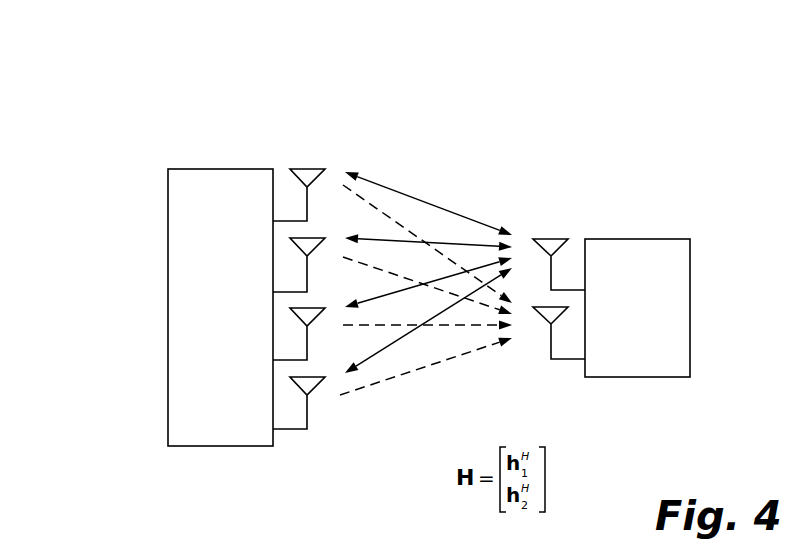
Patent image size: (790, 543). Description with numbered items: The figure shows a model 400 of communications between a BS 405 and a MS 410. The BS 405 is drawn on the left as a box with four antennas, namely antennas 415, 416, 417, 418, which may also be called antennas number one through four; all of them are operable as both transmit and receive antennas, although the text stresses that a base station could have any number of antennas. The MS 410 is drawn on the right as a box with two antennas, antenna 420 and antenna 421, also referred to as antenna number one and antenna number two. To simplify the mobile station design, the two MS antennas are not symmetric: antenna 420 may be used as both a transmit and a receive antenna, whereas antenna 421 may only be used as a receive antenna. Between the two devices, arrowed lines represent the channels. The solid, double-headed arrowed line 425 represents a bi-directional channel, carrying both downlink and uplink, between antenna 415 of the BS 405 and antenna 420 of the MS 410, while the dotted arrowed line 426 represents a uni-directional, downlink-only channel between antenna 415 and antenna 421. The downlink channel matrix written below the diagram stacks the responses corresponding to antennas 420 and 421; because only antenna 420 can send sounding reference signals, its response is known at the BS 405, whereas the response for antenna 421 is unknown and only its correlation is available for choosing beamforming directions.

The model 400 is at (92, 49).
The BS 405 is at (203, 169).
The MS 410 is at (655, 239).
The antenna 415 is at (307, 168).
The antenna 416 is at (315, 238).
The antenna 417 is at (315, 317).
The antenna 418 is at (317, 385).
The antenna 420 is at (551, 237).
The antenna 421 is at (542, 308).
The arrowed line 425 is at (410, 198).
The dotted arrowed line 426 is at (368, 203).